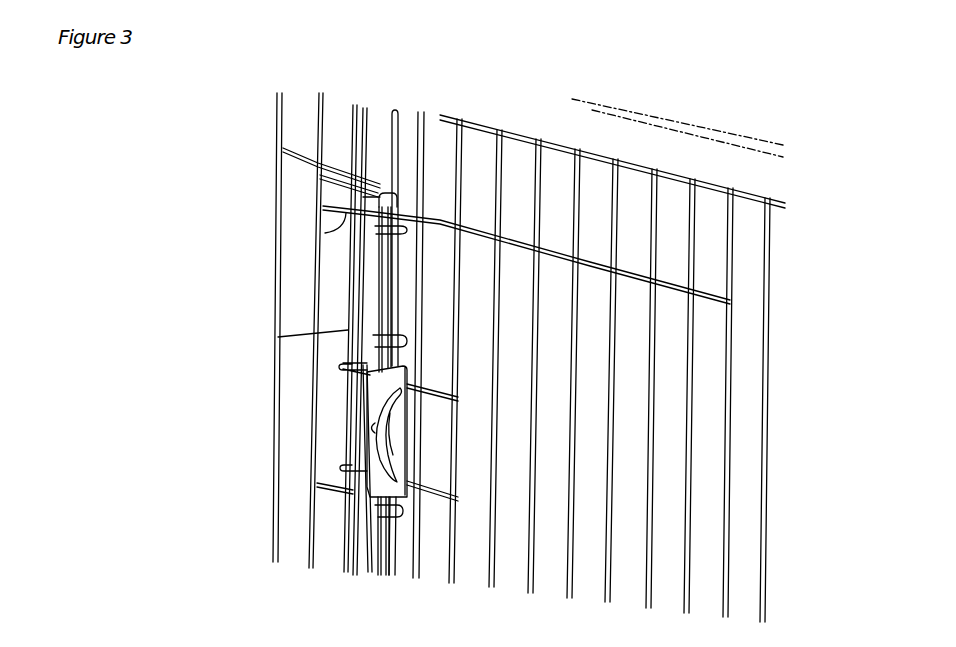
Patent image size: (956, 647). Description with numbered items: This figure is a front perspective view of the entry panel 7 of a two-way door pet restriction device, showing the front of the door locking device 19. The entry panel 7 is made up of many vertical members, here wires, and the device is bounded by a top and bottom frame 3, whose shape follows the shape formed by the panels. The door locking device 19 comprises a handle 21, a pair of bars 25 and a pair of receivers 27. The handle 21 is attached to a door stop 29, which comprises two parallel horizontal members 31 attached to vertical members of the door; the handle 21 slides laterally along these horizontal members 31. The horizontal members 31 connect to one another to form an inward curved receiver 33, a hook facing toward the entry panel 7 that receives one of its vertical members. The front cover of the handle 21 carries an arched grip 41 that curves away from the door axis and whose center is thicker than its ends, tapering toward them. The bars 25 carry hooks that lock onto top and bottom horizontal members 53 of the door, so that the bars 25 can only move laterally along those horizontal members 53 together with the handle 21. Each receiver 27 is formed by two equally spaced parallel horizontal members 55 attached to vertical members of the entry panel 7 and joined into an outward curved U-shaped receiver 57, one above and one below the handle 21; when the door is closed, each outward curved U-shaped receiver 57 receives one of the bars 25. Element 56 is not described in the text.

The top and bottom frame 3 is at (680, 110).
The entry panel 7 is at (272, 334).
The door locking device 19 is at (318, 410).
The handle 21 is at (340, 363).
The bar 25 is at (312, 174).
The receiver 27 is at (359, 292).
The door stop 29 is at (337, 460).
The horizontal member 31 is at (432, 388).
The inward curved receiver 33 is at (345, 414).
The grip 41 is at (340, 497).
The horizontal member 53 is at (665, 283).
The parallel horizontal member 55 is at (373, 334).
The upper hook 56 is at (320, 235).
The outward curved U-shaped receiver 57 is at (378, 254).